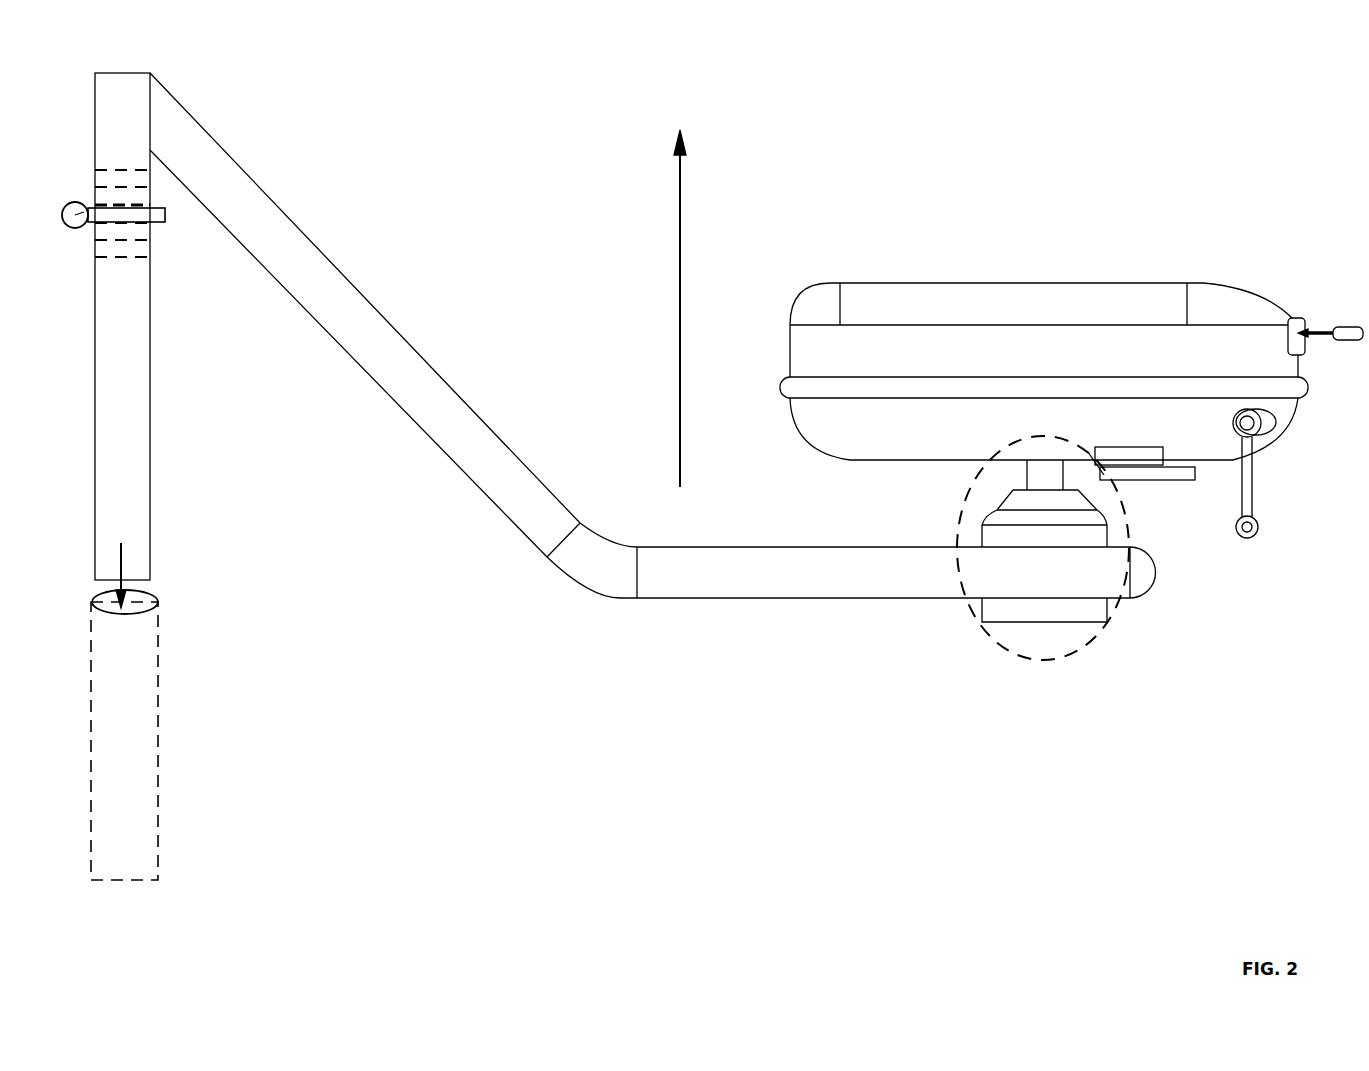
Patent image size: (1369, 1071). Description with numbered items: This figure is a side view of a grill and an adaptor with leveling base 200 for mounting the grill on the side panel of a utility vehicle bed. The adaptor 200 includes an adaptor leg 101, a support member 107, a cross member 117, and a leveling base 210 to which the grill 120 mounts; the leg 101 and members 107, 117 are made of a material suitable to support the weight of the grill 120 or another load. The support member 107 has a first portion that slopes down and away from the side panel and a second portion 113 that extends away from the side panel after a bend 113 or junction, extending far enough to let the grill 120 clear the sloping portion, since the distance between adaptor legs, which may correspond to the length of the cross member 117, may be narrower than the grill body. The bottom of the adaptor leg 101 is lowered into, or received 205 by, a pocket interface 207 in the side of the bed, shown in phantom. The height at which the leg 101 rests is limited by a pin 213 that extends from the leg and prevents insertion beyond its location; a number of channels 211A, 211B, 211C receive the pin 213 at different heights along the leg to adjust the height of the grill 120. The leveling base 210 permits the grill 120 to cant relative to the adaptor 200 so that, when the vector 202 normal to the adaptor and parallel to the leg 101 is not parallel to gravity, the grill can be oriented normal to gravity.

The adaptor leg 101 is at (143, 412).
The support member 107 is at (248, 178).
The second portion 113 is at (592, 560).
The cross member 117 is at (1155, 555).
The grill 120 is at (912, 298).
The adaptor 200 is at (1155, 100).
The vector 202 is at (682, 262).
The receiving 205 is at (133, 590).
The pocket interface 207 is at (158, 742).
The leveling base 210 is at (993, 638).
The channel 211A is at (108, 172).
The channel 211B is at (150, 221).
The channel 211C is at (138, 248).
The pin 213 is at (76, 223).